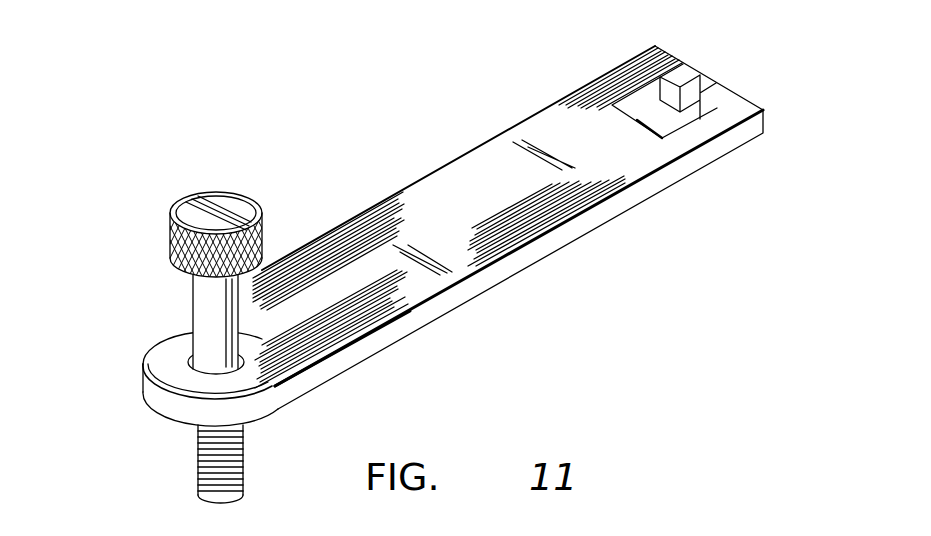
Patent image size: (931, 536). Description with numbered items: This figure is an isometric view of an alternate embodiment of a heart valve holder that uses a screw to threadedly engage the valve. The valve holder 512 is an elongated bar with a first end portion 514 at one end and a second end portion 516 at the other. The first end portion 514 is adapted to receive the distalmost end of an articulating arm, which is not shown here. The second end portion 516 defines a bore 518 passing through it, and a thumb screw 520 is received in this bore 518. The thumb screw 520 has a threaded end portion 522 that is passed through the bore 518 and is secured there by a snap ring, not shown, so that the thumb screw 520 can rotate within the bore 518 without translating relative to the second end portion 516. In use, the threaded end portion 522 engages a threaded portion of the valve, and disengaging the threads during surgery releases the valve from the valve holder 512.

The valve holder 512 is at (788, 190).
The first end portion 514 is at (655, 58).
The second end portion 516 is at (164, 341).
The bore 518 is at (273, 385).
The thumb screw 520 is at (226, 201).
The threaded end portion 522 is at (197, 462).